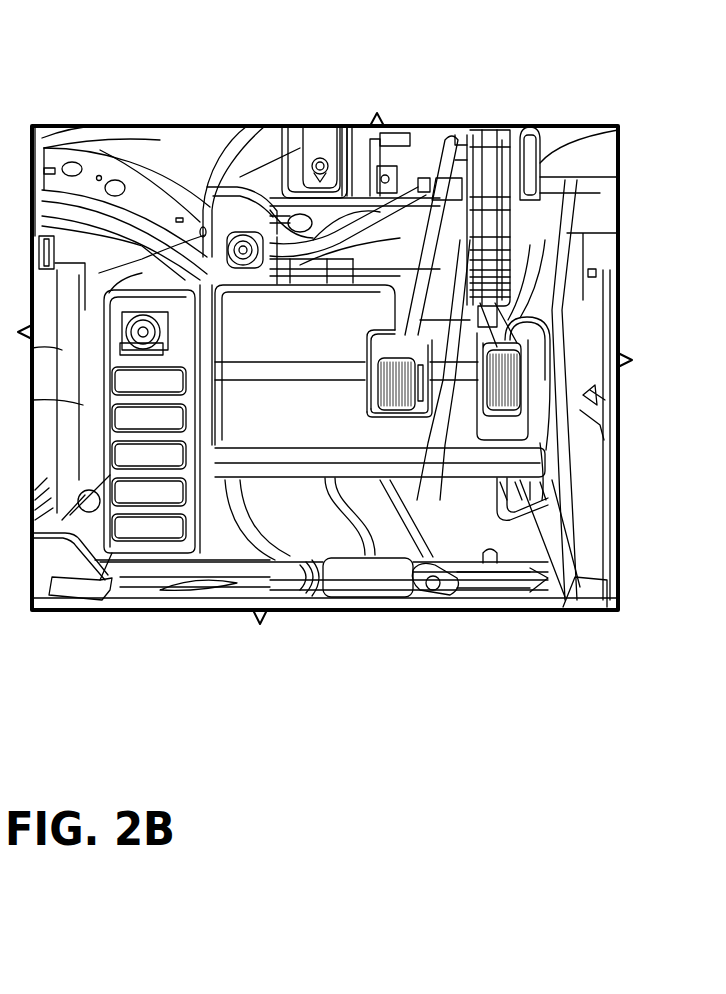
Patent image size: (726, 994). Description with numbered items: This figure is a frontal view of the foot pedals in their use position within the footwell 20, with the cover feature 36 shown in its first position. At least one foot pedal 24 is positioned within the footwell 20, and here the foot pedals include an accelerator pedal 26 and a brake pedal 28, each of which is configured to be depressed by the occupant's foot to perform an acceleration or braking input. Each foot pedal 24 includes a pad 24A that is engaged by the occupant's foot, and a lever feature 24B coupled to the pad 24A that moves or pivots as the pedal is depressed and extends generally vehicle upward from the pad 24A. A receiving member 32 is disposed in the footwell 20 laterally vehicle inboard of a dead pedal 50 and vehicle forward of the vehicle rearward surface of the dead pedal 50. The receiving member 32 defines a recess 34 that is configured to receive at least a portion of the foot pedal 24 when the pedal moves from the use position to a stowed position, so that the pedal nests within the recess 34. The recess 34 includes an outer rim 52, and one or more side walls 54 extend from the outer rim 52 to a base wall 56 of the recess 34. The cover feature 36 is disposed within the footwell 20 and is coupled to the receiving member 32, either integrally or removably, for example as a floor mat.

The footwell 20 is at (213, 257).
The foot pedal 24 is at (367, 358).
The pad 24A is at (385, 362).
The lever feature 24B is at (410, 355).
The accelerator pedal 26 is at (513, 417).
The brake pedal 28 is at (478, 215).
The receiving member 32 is at (272, 339).
The recess 34 is at (377, 425).
The cover feature 36 is at (312, 455).
The dead pedal 50 is at (147, 457).
The outer rim 52 is at (410, 417).
The side walls 54 is at (470, 560).
The base wall 56 is at (548, 578).